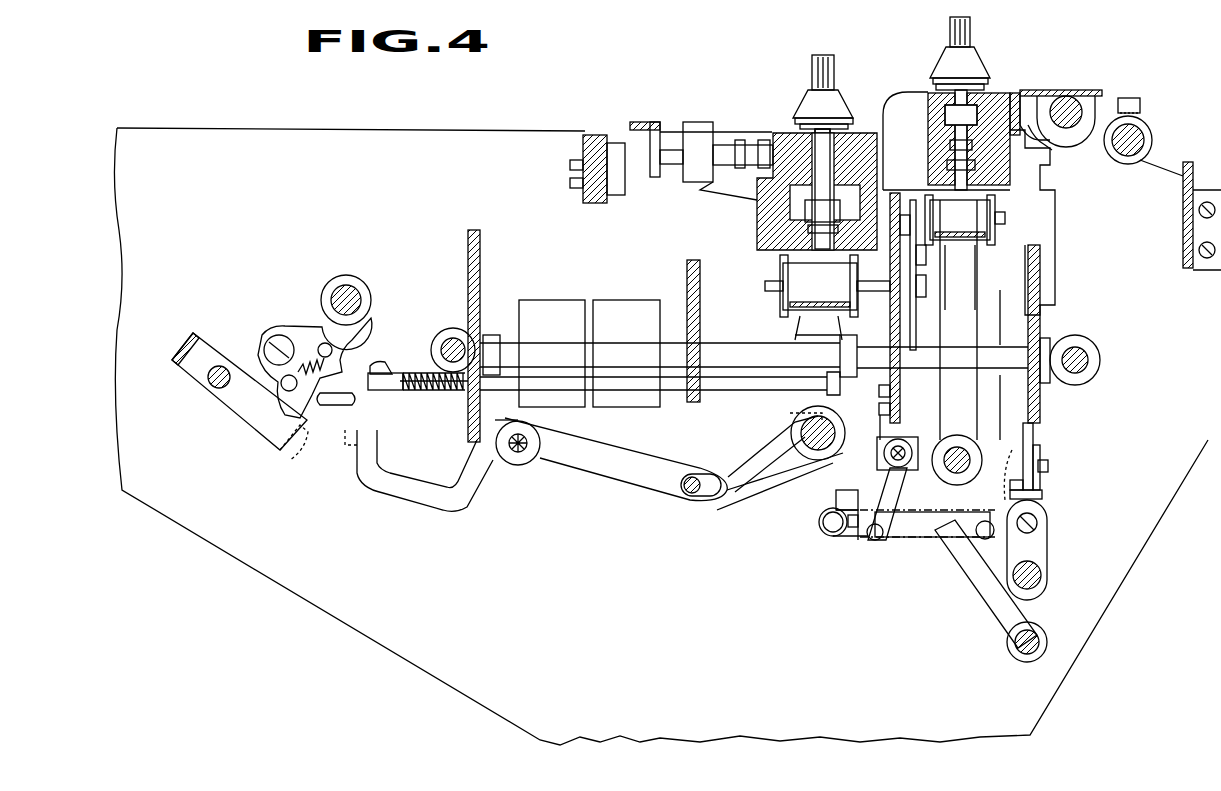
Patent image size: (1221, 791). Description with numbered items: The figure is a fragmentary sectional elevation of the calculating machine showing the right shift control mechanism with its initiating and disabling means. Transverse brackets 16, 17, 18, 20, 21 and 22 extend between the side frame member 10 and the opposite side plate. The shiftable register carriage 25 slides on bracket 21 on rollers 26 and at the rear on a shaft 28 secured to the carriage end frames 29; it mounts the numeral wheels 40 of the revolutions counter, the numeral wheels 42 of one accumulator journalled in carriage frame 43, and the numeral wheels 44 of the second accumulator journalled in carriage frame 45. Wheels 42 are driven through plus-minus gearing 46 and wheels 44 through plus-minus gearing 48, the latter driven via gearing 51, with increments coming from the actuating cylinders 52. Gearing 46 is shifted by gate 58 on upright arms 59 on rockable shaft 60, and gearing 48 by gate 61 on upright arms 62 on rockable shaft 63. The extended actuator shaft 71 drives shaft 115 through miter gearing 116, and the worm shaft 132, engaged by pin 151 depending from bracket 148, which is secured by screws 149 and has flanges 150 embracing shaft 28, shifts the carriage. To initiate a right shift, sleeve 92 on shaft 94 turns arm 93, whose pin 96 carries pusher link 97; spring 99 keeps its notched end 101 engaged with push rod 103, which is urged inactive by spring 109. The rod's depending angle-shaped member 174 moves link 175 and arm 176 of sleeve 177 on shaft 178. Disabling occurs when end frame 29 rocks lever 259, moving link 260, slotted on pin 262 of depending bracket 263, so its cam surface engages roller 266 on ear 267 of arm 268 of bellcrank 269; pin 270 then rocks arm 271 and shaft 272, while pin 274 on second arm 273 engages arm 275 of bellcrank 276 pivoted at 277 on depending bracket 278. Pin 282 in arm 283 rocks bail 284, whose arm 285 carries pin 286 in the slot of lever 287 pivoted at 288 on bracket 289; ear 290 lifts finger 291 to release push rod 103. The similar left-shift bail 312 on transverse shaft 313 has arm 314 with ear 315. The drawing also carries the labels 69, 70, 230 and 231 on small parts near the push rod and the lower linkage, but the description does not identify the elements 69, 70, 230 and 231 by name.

The side frame member 10 is at (466, 138).
The rear transverse bracket 16 is at (1183, 220).
The transverse bracket 17 is at (1040, 300).
The transverse bracket 18 is at (900, 330).
The transverse bracket 20 is at (700, 335).
The transverse bracket 21 is at (583, 150).
The transverse bracket 22 is at (480, 292).
The shiftable register carriage 25 is at (895, 102).
The rollers 26 is at (614, 193).
The shaft 28 is at (1057, 108).
The carriage end frame 29 is at (1020, 82).
The numeral wheels of the revolutions counter 40 is at (712, 118).
The numeral wheels of one accumulator 42 is at (805, 105).
The carriage frame 43 is at (788, 138).
The numeral wheels of the second accumulator 44 is at (968, 58).
The carriage frame 45 is at (988, 92).
The plus-minus gearing 46 is at (783, 275).
The plus-minus gearing 48 is at (975, 225).
The gearing 51 is at (926, 262).
The actuating cylinders 52 is at (585, 407).
The gate 58 is at (818, 328).
The upright arms 59 is at (800, 340).
The transverse rockable shaft 60 is at (806, 437).
The gate 61 is at (972, 248).
The upright arms 62 is at (972, 403).
The transverse rockable shaft 63 is at (965, 455).
The bushing 69 is at (448, 338).
The collar 70 is at (493, 342).
The extended actuator shaft 71 is at (684, 350).
The sleeve 92 is at (368, 300).
The arm 93 is at (322, 326).
The shaft 94 is at (345, 292).
The pin 96 is at (268, 342).
The pusher link 97 is at (300, 410).
The spring 99 is at (315, 368).
The notched end 101 is at (382, 358).
The push rod 103 is at (378, 391).
The spring 109 is at (450, 395).
The shaft 115 is at (1089, 360).
The miter gearing 116 is at (1078, 340).
The worm shaft 132 is at (1148, 142).
The bracket 148 is at (1035, 92).
The screws 149 is at (1048, 148).
The flanges 150 is at (1088, 108).
The pin 151 is at (1140, 112).
The depending angle-shaped member 174 is at (840, 360).
The link 175 is at (835, 537).
The arm 176 is at (1045, 544).
The sleeve 177 is at (1041, 575).
The shaft 178 is at (1036, 588).
The bracket 230 is at (836, 496).
The screw 231 is at (858, 540).
The lever 259 is at (1047, 240).
The link 260 is at (1040, 460).
The pin 262 is at (1048, 468).
The depending bracket 263 is at (1034, 440).
The roller 266 is at (1042, 494).
The ear 267 is at (1000, 474).
The arm 268 is at (927, 523).
The bellcrank 269 is at (965, 442).
The pin 270 is at (962, 556).
The arm 271 is at (988, 580).
The shaft 272 is at (1010, 645).
The second arm 273 is at (975, 535).
The pin 274 is at (962, 514).
The arm 275 is at (877, 540).
The bellcrank 276 is at (892, 447).
The pivot 277 is at (945, 482).
The depending bracket 278 is at (890, 393).
The pin 282 is at (890, 412).
The arm 283 is at (828, 455).
The bail 284 is at (790, 420).
The arm 285 is at (756, 448).
The pin 286 is at (690, 476).
The lever 287 is at (535, 462).
The pivot 288 is at (520, 453).
The bracket 289 is at (512, 420).
The ear 290 is at (355, 446).
The finger 291 is at (332, 398).
The bail 312 is at (182, 342).
The transverse shaft 313 is at (207, 382).
The arm 314 is at (232, 410).
The ear 315 is at (290, 456).